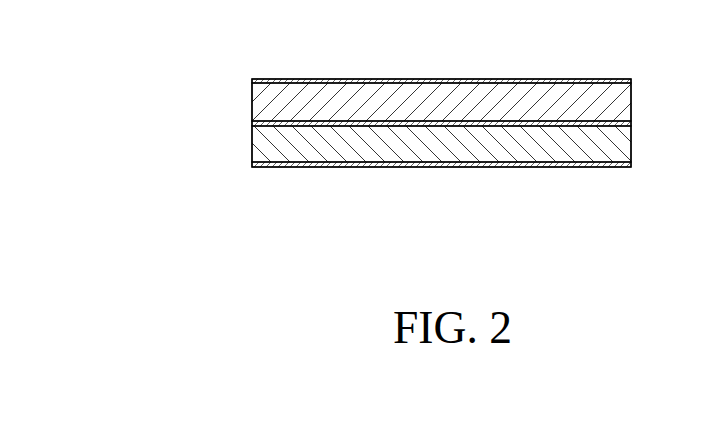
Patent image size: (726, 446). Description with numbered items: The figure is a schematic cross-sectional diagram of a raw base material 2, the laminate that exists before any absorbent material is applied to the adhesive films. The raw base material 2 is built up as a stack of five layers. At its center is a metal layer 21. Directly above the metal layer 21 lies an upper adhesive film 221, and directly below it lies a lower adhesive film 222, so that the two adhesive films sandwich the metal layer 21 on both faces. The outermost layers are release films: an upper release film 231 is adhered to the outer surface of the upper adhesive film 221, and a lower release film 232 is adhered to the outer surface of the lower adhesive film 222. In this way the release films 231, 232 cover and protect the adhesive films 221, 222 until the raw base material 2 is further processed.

The raw base material 2 is at (629, 78).
The upper release film 231 is at (631, 80).
The upper adhesive film 221 is at (623, 102).
The metal layer 21 is at (630, 125).
The lower adhesive film 222 is at (623, 142).
The lower release film 232 is at (630, 165).